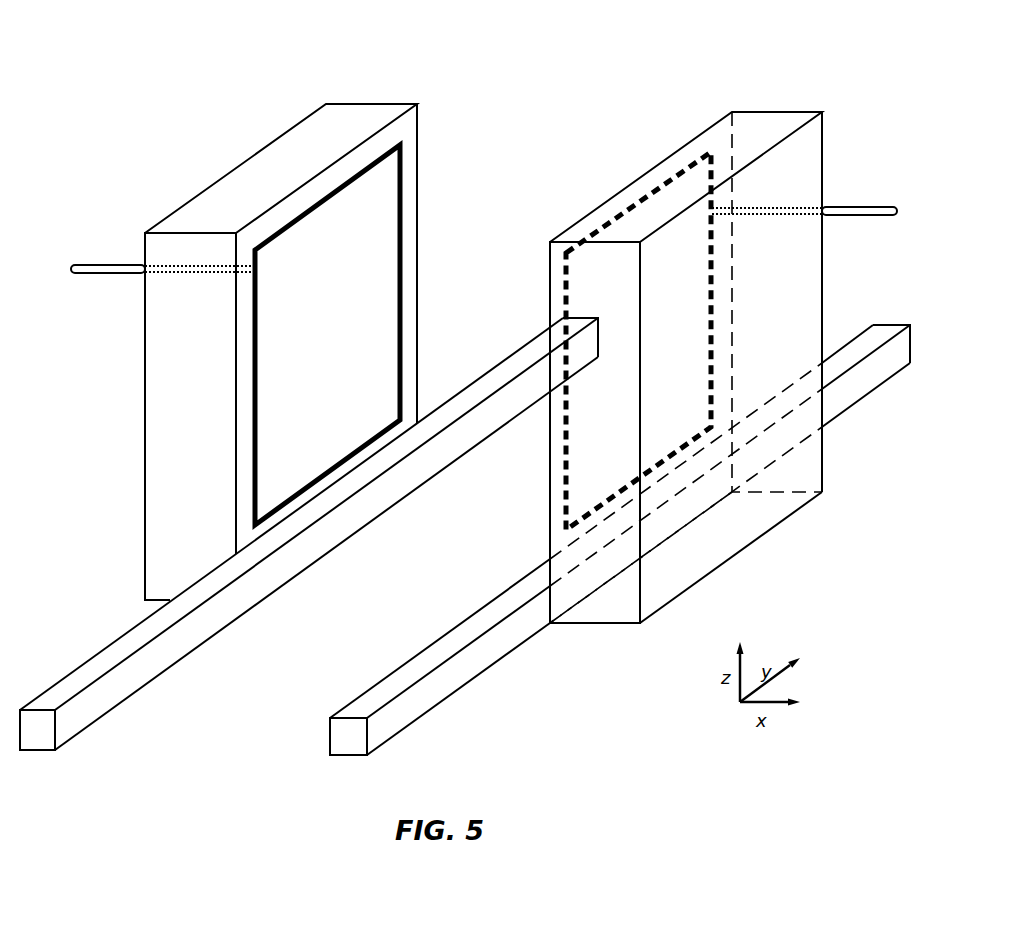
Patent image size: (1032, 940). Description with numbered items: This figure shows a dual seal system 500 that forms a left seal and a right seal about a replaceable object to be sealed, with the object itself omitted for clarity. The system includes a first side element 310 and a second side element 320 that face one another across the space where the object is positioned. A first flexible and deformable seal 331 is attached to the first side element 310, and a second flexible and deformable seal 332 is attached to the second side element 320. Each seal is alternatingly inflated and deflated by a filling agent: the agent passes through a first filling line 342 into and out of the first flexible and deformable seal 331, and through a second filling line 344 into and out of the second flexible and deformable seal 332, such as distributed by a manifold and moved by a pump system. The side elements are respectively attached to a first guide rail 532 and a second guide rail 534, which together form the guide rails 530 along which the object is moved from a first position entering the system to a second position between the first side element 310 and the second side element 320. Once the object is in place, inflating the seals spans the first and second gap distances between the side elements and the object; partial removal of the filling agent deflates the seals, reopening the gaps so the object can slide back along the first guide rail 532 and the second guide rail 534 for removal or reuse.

The dual seal system 500 is at (182, 68).
The first side element 310 is at (353, 103).
The second side element 320 is at (782, 112).
The first flexible and deformable seal 331 is at (330, 197).
The second flexible and deformable seal 332 is at (567, 412).
The first filling line 342 is at (100, 265).
The second filling line 344 is at (870, 207).
The guide rails 530 is at (511, 318).
The first guide rail 532 is at (513, 350).
The second guide rail 534 is at (515, 582).